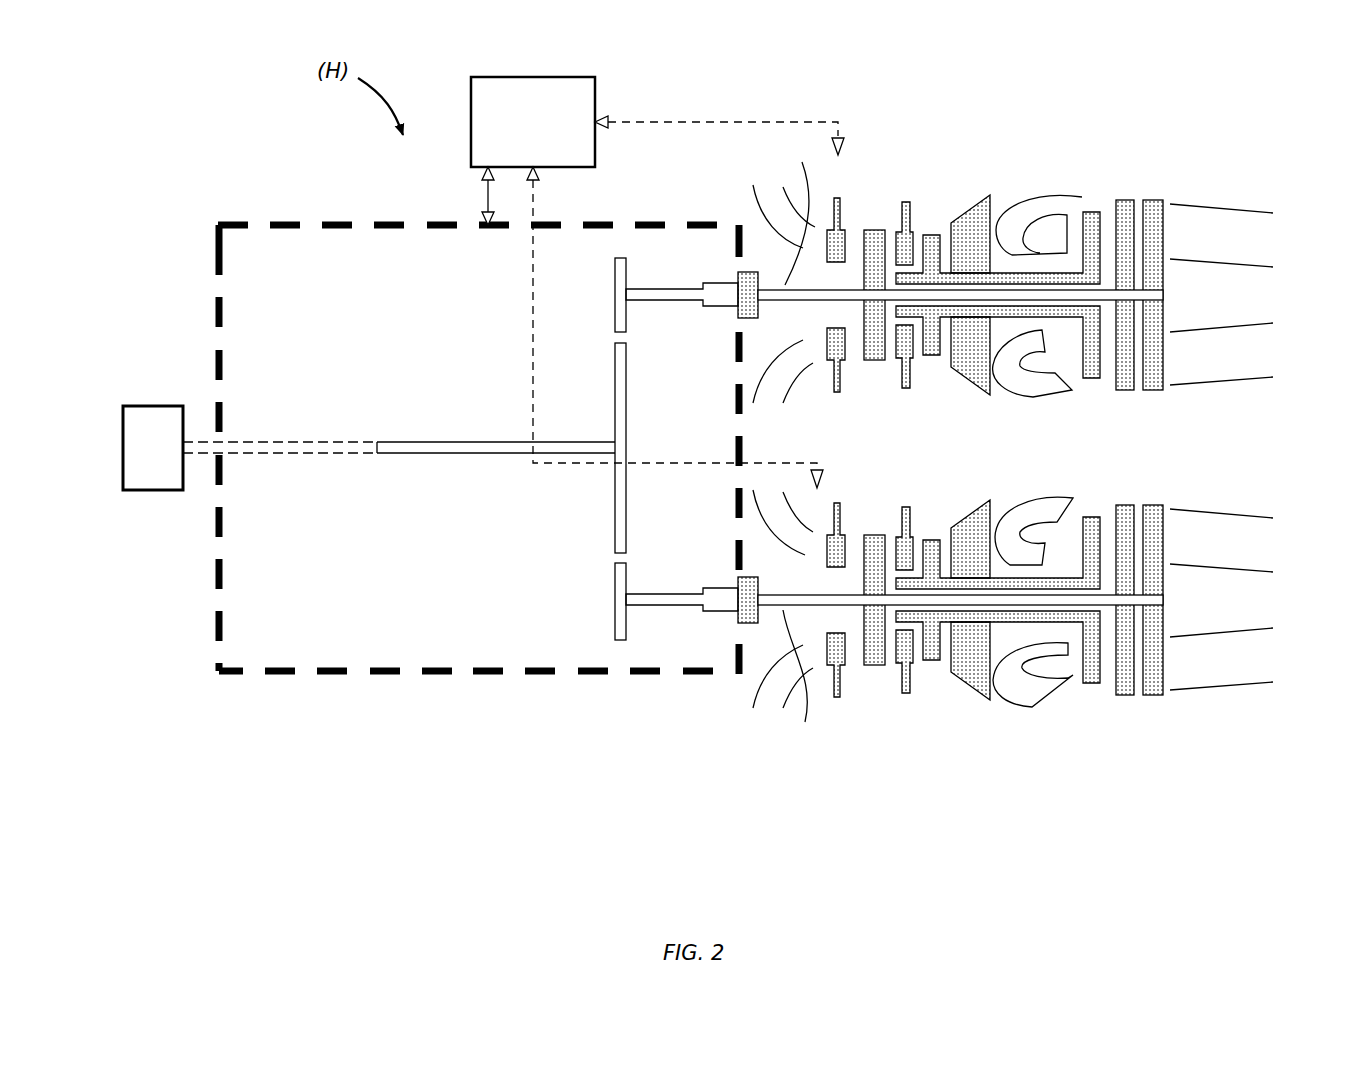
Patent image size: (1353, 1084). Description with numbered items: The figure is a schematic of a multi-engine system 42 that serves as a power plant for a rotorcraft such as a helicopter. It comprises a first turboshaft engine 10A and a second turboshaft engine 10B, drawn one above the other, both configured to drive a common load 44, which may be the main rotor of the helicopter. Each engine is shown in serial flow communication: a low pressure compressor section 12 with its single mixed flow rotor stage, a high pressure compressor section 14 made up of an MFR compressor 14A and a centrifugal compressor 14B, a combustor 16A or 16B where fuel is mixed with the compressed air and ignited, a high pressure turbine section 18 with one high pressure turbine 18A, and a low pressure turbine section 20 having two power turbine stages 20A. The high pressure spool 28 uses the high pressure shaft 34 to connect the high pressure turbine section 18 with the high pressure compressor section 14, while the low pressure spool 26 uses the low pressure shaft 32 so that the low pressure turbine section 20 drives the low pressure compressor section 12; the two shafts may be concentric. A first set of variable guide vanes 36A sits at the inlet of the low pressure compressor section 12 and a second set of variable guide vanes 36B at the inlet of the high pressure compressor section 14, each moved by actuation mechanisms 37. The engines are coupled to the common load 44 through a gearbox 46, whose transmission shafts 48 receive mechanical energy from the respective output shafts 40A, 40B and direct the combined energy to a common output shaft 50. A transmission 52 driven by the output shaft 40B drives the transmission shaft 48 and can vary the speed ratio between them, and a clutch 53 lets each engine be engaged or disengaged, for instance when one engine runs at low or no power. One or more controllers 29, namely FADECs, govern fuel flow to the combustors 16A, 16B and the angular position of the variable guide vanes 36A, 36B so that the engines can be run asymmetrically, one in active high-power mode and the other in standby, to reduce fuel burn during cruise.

The first turboshaft engine 10A is at (1082, 149).
The second turboshaft engine 10B is at (1082, 747).
The low pressure compressor section 12 is at (877, 232).
The high pressure compressor section 14 is at (955, 463).
The MFR compressor 14A is at (930, 240).
The centrifugal compressor 14B is at (930, 545).
The combustor 16A is at (1033, 703).
The combustor 16B is at (1033, 403).
The high pressure turbine section 18 is at (1055, 435).
The high pressure turbine 18A is at (1088, 225).
The low pressure turbine section 20 is at (1125, 392).
The power turbine stages 20A is at (1153, 200).
The low pressure spool 26 is at (1168, 295).
The high pressure spool 28 is at (1005, 264).
The controller 29 is at (596, 103).
The low pressure shaft 32 is at (953, 300).
The high pressure shaft 34 is at (1062, 312).
The first set of variable guide vanes 36A is at (830, 384).
The second set of variable guide vanes 36B is at (897, 383).
The actuation mechanism 37 is at (832, 708).
The output shaft 40A is at (798, 269).
The output shaft 40B is at (788, 618).
The multi-engine system 42 is at (282, 148).
The common load 44 is at (155, 406).
The gearbox 46 is at (440, 673).
The transmission shafts 48 is at (665, 283).
The common output shaft 50 is at (202, 455).
The transmission 52 is at (726, 581).
The clutch 53 is at (753, 263).